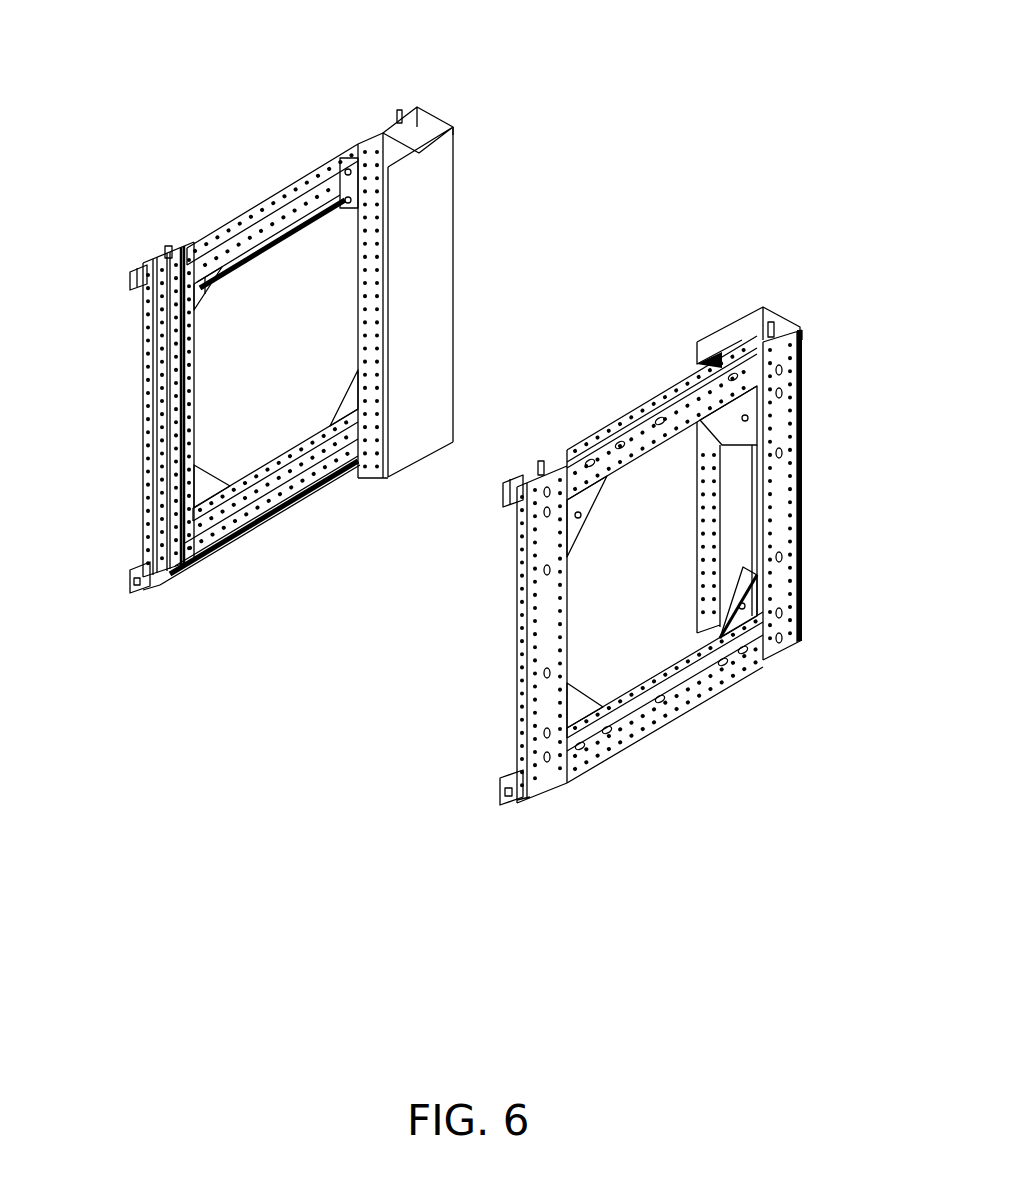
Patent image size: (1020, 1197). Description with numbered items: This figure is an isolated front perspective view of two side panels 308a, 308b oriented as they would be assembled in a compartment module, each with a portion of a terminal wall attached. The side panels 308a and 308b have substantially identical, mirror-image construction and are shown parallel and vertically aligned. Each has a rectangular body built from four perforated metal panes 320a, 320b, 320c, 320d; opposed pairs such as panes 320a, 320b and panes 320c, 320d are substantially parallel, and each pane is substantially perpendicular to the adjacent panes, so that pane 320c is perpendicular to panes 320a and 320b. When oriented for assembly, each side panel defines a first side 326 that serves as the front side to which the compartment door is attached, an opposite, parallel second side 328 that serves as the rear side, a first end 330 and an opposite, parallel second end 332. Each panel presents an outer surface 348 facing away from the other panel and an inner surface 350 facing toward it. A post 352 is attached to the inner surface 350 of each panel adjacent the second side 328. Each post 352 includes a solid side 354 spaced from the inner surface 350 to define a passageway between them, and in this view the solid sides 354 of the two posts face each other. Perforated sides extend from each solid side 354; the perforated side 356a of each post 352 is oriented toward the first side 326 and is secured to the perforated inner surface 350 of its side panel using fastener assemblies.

The side panel 308a is at (393, 90).
The side panel 308b is at (772, 297).
The perforated metal pane 320a is at (408, 118).
The perforated metal pane 320b is at (143, 377).
The perforated metal pane 320c is at (283, 503).
The perforated metal pane 320d is at (333, 150).
The first side 326 is at (127, 493).
The second side 328 is at (465, 252).
The first end 330 is at (237, 197).
The second end 332 is at (233, 553).
The outer surface 348 is at (595, 737).
The inner surface 350 is at (302, 190).
The post 352 is at (455, 145).
The solid side 354 is at (420, 342).
The perforated side 356a is at (373, 417).